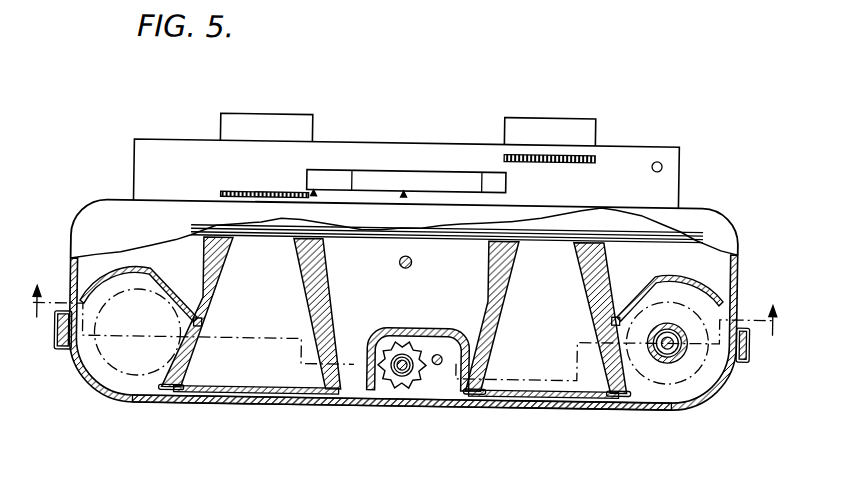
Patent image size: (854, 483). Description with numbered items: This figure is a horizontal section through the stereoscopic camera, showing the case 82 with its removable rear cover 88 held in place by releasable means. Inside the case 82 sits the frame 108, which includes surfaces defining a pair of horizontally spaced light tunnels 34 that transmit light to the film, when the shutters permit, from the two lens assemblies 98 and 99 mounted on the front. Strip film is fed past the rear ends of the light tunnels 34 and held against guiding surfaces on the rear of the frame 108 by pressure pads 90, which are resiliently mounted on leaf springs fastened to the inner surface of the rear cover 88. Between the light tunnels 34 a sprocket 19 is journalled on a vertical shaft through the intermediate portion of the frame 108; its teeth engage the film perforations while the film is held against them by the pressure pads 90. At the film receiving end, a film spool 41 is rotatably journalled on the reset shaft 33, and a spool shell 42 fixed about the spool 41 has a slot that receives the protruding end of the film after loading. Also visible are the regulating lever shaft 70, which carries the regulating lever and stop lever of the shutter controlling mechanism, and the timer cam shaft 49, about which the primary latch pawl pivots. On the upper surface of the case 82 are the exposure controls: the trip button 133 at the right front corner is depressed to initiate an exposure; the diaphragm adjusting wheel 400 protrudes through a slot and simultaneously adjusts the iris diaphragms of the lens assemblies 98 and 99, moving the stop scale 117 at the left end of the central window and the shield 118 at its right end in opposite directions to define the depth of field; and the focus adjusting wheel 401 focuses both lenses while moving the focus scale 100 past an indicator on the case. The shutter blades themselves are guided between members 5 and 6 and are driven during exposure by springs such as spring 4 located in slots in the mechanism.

The spring 4 is at (400, 334).
The guide member 5 is at (364, 239).
The guide member 6 is at (585, 230).
The sprocket 19 is at (418, 383).
The reset shaft 33 is at (669, 328).
The light tunnels 34 is at (264, 295).
The film spool 41 is at (680, 334).
The spool shell 42 is at (664, 353).
The timer cam shaft 49 is at (411, 264).
The regulating lever shaft 70 is at (434, 350).
The case 82 is at (718, 216).
The rear cover 88 is at (420, 408).
The pressure pads 90 is at (239, 389).
The lens assembly 98 is at (262, 117).
The lens assembly 99 is at (568, 118).
The focus scale 100 is at (416, 169).
The frame 108 is at (203, 256).
The stop scale 117 is at (327, 173).
The shield 118 is at (495, 188).
The trip button 133 is at (654, 168).
The diaphragm adjusting wheel 400 is at (231, 193).
The focus adjusting wheel 401 is at (568, 162).